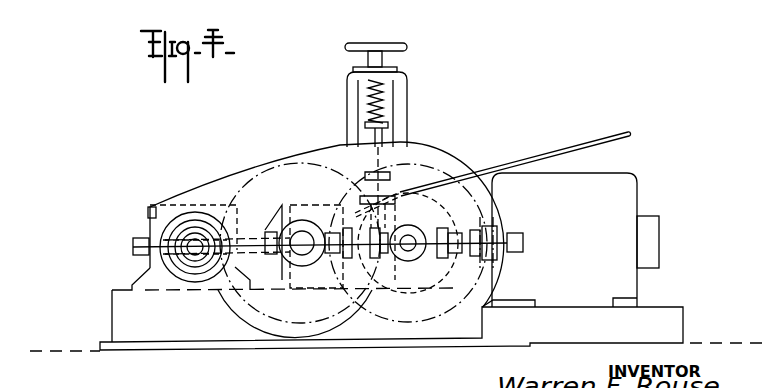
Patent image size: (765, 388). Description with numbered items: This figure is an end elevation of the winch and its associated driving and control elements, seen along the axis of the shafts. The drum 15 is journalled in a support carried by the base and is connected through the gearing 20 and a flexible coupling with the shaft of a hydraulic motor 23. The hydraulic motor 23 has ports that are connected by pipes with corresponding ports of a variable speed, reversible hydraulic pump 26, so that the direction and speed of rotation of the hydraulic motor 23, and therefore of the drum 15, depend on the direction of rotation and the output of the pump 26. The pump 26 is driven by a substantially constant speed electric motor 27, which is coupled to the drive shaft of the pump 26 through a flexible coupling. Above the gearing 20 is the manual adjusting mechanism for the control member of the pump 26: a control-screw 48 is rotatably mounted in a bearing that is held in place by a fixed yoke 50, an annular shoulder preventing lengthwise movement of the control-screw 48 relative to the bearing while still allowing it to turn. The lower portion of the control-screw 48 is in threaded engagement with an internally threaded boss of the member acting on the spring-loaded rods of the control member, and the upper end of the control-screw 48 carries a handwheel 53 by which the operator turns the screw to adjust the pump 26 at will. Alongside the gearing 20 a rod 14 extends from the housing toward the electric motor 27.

The control rod 14 is at (573, 147).
The drum 15 is at (400, 292).
The gearing 20 is at (248, 178).
The hydraulic motor 23 is at (158, 206).
The variable speed, reversible hydraulic pump 26 is at (305, 205).
The electric motor 27 is at (575, 240).
The control-screw 48 is at (370, 63).
The fixed yoke 50 is at (407, 103).
The handwheel 53 is at (397, 43).